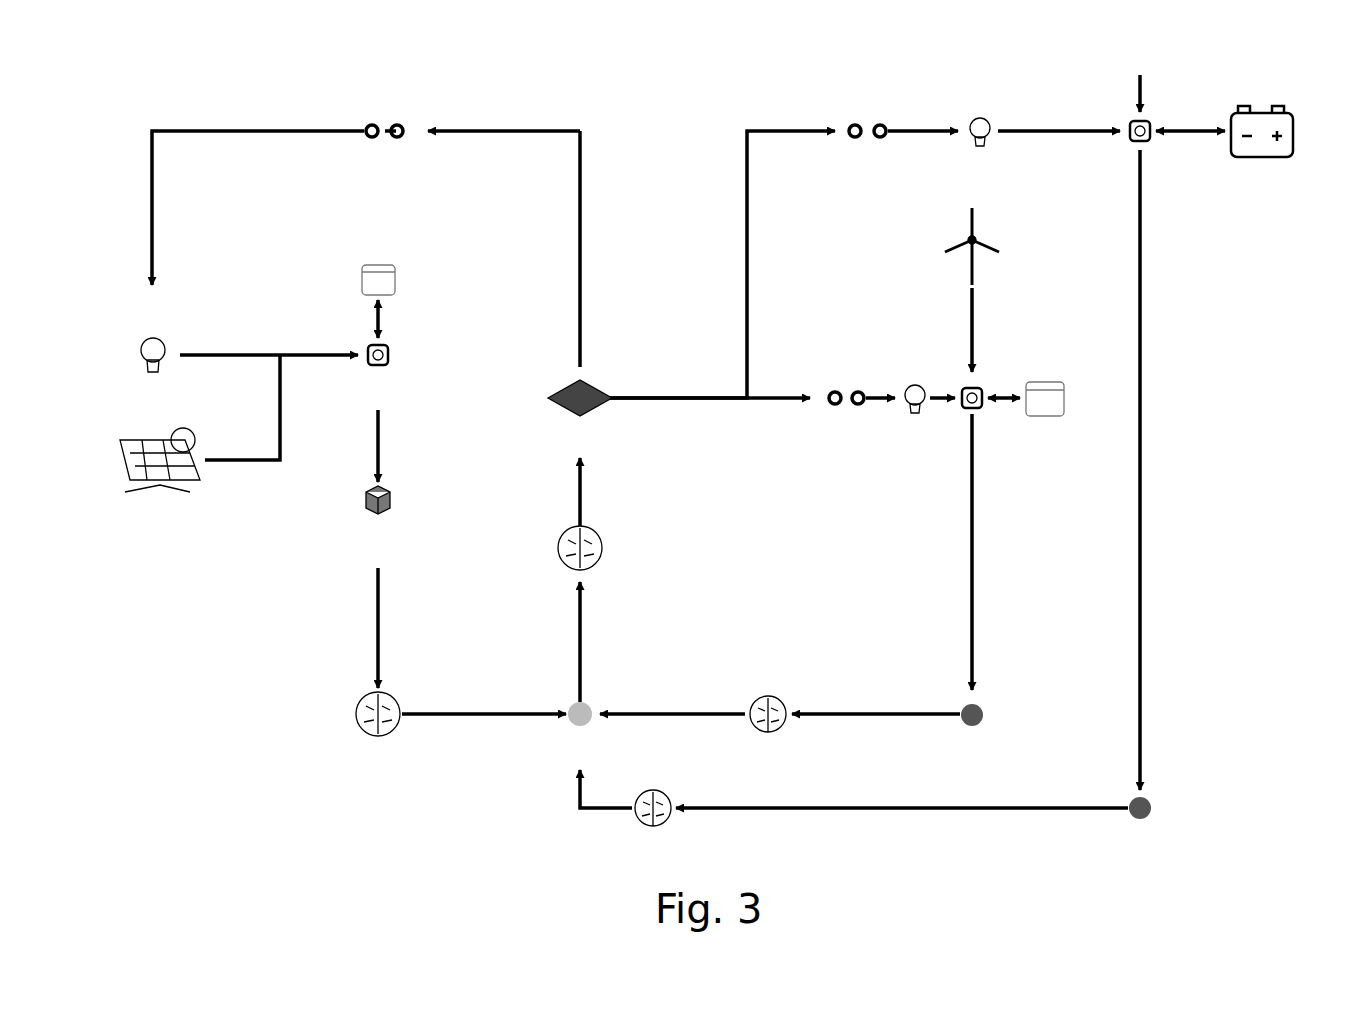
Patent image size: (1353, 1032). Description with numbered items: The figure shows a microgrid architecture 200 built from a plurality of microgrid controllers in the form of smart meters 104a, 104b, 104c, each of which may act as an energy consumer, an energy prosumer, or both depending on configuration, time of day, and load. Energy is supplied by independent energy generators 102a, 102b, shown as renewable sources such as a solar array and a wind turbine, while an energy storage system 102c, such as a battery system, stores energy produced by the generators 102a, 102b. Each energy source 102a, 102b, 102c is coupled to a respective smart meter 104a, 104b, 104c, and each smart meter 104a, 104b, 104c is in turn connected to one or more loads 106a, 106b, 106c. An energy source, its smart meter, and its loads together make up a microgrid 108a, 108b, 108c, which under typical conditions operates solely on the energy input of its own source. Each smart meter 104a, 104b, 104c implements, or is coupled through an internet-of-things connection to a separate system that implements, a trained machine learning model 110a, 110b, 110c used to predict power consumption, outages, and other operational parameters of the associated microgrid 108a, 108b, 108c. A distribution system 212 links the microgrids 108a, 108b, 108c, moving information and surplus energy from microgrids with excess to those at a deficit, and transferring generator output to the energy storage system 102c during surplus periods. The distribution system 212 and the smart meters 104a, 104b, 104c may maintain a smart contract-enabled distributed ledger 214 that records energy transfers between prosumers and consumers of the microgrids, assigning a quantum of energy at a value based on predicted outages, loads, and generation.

The microgrid architecture 200 is at (648, 88).
The independent energy generator 102a is at (138, 440).
The independent energy generator 102b is at (985, 235).
The energy storage system 102c is at (1242, 108).
The smart meter 104a is at (392, 350).
The smart meter 104b is at (985, 390).
The smart meter 104c is at (1152, 120).
The load 106a is at (135, 340).
The load 106b is at (910, 385).
The load 106c is at (985, 118).
The microgrid 108a is at (410, 238).
The microgrid 108b is at (935, 248).
The microgrid 108c is at (1162, 68).
The trained machine learning model 110a is at (400, 698).
The trained machine learning model 110b is at (778, 696).
The trained machine learning model 110c is at (640, 822).
The distribution system 212 is at (608, 387).
The smart contract-enabled distributed ledger 214 is at (582, 413).